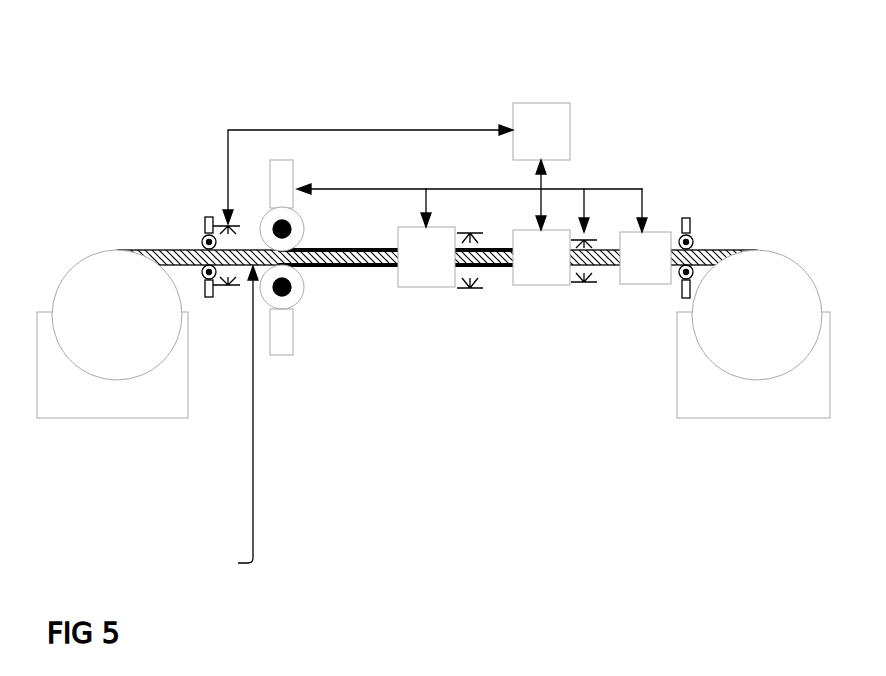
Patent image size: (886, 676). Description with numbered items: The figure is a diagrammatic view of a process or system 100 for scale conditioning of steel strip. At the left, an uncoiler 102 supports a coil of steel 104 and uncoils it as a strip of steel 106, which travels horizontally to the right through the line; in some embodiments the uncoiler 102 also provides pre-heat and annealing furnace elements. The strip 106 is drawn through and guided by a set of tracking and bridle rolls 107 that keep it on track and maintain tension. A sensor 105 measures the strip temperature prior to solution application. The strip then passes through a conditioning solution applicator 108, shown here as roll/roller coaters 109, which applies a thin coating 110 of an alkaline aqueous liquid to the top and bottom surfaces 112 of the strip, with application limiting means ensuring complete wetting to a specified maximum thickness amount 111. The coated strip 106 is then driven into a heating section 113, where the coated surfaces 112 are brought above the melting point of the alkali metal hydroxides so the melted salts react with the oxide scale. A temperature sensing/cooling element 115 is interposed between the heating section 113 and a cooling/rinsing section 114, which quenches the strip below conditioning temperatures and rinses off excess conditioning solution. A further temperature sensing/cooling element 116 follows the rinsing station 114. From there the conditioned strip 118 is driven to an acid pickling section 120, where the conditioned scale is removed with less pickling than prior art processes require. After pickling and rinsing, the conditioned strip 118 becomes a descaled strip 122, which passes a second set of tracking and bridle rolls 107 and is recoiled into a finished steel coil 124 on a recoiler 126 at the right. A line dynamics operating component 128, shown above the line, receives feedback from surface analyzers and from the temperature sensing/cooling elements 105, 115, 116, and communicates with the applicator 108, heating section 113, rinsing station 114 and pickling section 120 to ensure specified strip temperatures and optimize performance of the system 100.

The process or system for scale conditioning 100 is at (165, 68).
The uncoiler 102 is at (140, 418).
The coil of steel 104 is at (110, 258).
The sensor (temperature sensing/cooling element) 105 is at (226, 290).
The strip of steel 106 is at (168, 250).
The tracking and bridle rolls 107 is at (204, 218).
The conditioning solution applicator 108 is at (282, 340).
The roll/roller coaters 109 is at (262, 222).
The thin coating of alkaline aqueous liquid 110 is at (310, 268).
The specified maximum thickness amount 111 is at (325, 236).
The top and bottom surfaces of the steel strip 112 is at (231, 419).
The heating section 113 is at (442, 287).
The cooling/rinsing section 114 is at (549, 286).
The temperature sensing/cooling element 115 is at (470, 288).
The temperature sensing/cooling element 116 is at (585, 283).
The conditioned strip 118 is at (615, 267).
The acid pickling section 120 is at (650, 284).
The descaled strip 122 is at (705, 250).
The finished steel coil 124 is at (757, 250).
The recoiler 126 is at (742, 418).
The line dynamics operating component 128 is at (547, 103).